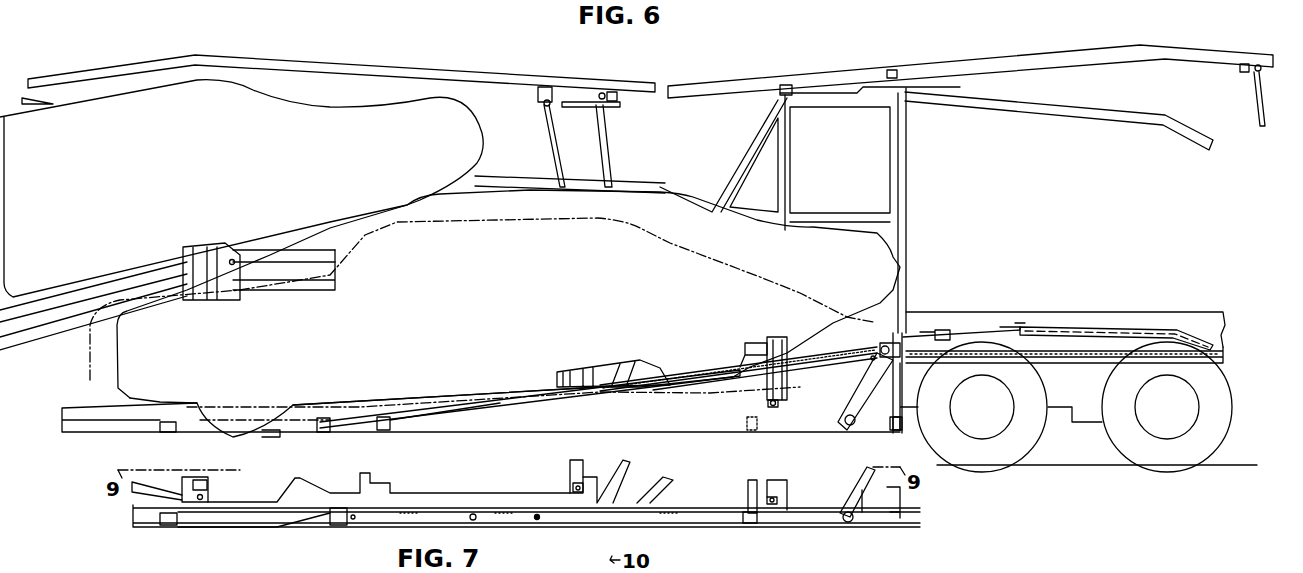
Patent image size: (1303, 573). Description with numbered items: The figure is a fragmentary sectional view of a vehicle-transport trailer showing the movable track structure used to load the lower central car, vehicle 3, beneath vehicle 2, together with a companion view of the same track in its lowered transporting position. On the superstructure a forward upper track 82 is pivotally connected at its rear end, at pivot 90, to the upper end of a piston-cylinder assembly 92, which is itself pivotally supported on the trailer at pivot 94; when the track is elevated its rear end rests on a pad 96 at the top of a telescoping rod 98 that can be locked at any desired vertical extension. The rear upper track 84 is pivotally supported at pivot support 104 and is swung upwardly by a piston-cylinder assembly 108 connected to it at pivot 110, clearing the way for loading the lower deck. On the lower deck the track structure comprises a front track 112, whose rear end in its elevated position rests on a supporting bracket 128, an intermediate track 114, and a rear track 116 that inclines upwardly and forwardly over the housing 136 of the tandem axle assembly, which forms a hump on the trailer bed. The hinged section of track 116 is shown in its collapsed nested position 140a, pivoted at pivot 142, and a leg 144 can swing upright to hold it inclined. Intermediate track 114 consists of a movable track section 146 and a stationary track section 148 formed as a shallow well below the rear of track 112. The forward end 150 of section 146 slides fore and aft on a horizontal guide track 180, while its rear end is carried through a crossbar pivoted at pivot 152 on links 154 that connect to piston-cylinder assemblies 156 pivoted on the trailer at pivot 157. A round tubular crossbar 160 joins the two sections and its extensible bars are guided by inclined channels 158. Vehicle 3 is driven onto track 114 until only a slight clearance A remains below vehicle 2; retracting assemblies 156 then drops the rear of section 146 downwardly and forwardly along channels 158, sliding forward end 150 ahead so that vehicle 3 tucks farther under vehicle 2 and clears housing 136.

In FIG. 6, the vehicle 2 is at (128, 184).
In FIG. 6, the vehicle 3 is at (498, 284).
In FIG. 6, the clearance A is at (400, 205).
In FIG. 6, the forward upper track 82 is at (387, 65).
In FIG. 6, the rear upper track 84 is at (1013, 52).
In FIG. 6, the pivotal connection 90 is at (545, 107).
In FIG. 7, the piston-cylinder assembly 92 is at (573, 471).
In FIG. 7, the pivotal support 94 is at (575, 487).
In FIG. 6, the pad 96 is at (620, 108).
In FIG. 6, the rod 98 is at (608, 145).
In FIG. 6, the pivot support 104 is at (792, 90).
In FIG. 6, the piston-cylinder assembly 108 is at (1260, 112).
In FIG. 6, the pivotal connection 110 is at (1256, 72).
In FIG. 6, the front track 112 is at (300, 255).
In FIG. 6, the intermediate track 114 is at (487, 412).
In FIG. 6, the rear track 116 is at (1000, 327).
In FIG. 6, the supporting bracket 128 is at (237, 290).
In FIG. 6, the housing 136 is at (1042, 345).
In FIG. 6, the collapsed nested position 140a is at (1140, 330).
In FIG. 6, the pivot 142 is at (1020, 323).
In FIG. 6, the leg 144 is at (933, 337).
In FIG. 6, the movable track section 146 is at (557, 372).
In FIG. 7, the movable track section 146 is at (520, 520).
In FIG. 6, the stationary track section 148 is at (267, 435).
In FIG. 6, the forward end 150 is at (385, 427).
In FIG. 7, the forward end 150 is at (337, 527).
In FIG. 6, the pivotal support 152 is at (795, 355).
In FIG. 6, the link 154 is at (790, 333).
In FIG. 7, the link 154 is at (750, 487).
In FIG. 6, the piston-cylinder assembly 156 is at (747, 343).
In FIG. 7, the piston-cylinder assembly 156 is at (773, 486).
In FIG. 6, the pivotal support 157 is at (772, 413).
In FIG. 7, the pivotal support 157 is at (772, 507).
In FIG. 6, the channel 158 is at (870, 375).
In FIG. 7, the channel 158 is at (857, 508).
In FIG. 6, the round tubular crossbar 160 is at (905, 320).
In FIG. 7, the round tubular crossbar 160 is at (858, 527).
In FIG. 6, the horizontal guide track 180 is at (350, 427).